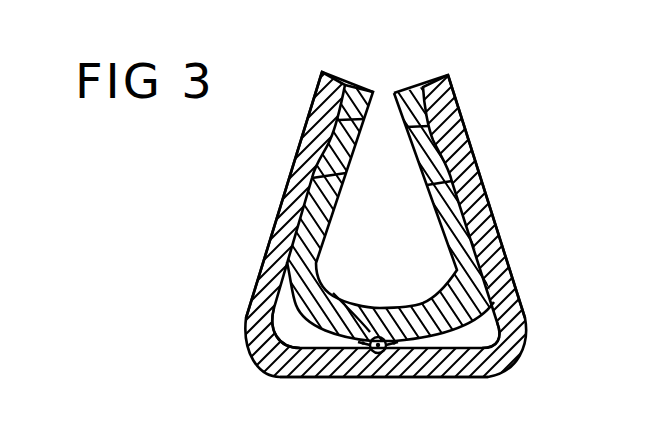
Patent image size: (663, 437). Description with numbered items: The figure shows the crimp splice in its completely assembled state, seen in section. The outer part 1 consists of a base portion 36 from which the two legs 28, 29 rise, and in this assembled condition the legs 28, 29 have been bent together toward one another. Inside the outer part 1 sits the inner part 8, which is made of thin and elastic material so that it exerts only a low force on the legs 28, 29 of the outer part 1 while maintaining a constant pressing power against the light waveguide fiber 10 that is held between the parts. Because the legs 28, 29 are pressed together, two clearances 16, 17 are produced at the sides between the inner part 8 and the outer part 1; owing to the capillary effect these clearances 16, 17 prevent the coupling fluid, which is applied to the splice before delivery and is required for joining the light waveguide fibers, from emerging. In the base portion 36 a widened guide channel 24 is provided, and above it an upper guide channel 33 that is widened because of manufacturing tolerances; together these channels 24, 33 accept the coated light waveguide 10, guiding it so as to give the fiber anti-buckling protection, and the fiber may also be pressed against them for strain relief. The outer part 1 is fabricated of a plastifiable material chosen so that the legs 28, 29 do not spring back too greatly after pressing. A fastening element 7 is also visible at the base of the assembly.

The outer part 1 is at (462, 107).
The fastening pin head 7 is at (398, 350).
The inner part 8 is at (360, 88).
The light waveguide fiber 10 is at (380, 354).
The clearance 16 is at (293, 323).
The clearance 17 is at (475, 332).
The widened guide channel 24 is at (360, 352).
The leg 28 is at (280, 238).
The leg 29 is at (483, 238).
The upper guide channel 33 is at (343, 301).
The base portion 36 is at (449, 368).